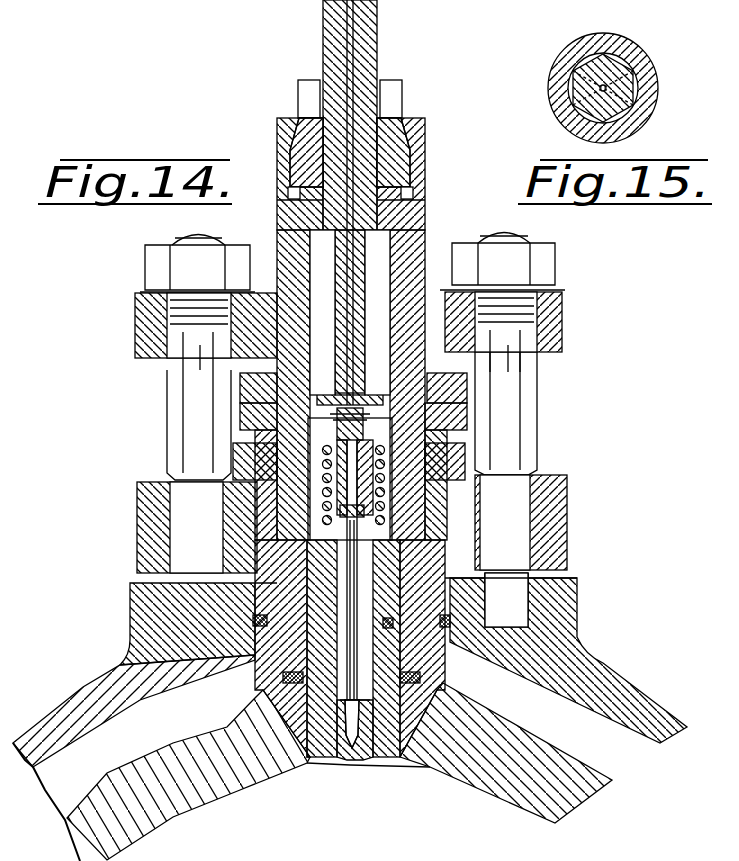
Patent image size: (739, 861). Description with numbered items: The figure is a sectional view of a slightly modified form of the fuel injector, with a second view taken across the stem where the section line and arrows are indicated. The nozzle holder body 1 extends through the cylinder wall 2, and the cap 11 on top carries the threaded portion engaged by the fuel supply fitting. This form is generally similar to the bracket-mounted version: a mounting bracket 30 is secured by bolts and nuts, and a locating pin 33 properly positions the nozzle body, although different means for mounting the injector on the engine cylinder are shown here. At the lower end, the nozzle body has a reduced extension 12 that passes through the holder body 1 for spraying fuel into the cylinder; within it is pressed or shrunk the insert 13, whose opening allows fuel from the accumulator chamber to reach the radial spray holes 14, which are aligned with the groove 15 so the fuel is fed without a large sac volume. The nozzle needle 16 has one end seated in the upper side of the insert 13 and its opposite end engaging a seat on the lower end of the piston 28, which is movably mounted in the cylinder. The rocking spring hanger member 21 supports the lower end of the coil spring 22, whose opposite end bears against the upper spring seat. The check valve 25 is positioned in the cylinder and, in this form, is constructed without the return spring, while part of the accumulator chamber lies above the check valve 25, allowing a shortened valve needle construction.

The nozzle holder body 1 is at (480, 658).
The cylinder wall 2 is at (560, 772).
The cap 11 is at (365, 28).
The reduced extension 12 is at (280, 676).
The insert 13 is at (363, 747).
The radial spray holes 14 is at (347, 738).
The groove 15 is at (304, 432).
The nozzle needle 16 is at (425, 640).
The rocking spring hanger member 21 is at (500, 530).
The coil spring 22 is at (555, 480).
The check valve 25 is at (413, 433).
The piston 28 is at (392, 446).
The mounting bracket 30 is at (553, 320).
The locating pin 33 is at (530, 355).